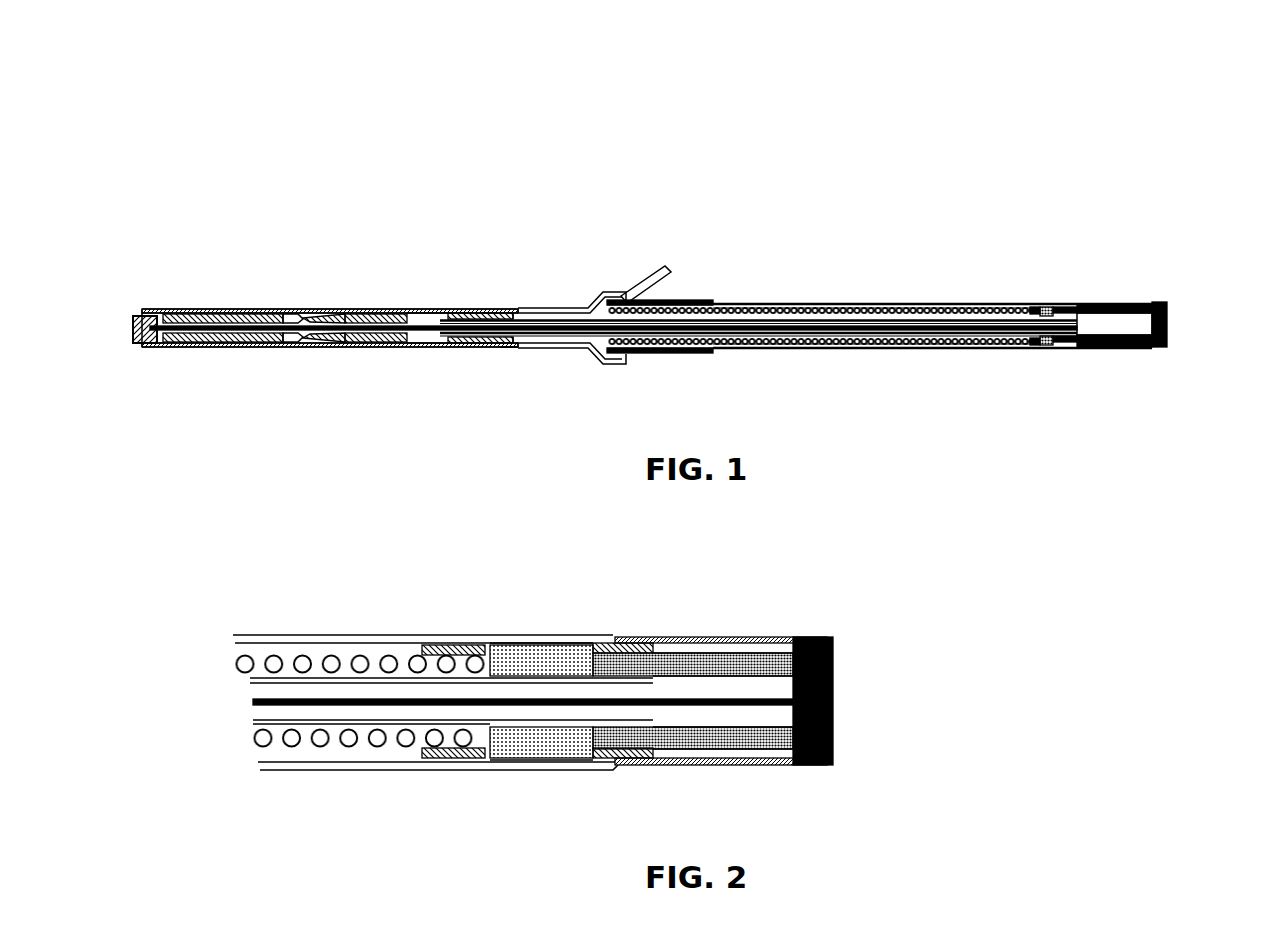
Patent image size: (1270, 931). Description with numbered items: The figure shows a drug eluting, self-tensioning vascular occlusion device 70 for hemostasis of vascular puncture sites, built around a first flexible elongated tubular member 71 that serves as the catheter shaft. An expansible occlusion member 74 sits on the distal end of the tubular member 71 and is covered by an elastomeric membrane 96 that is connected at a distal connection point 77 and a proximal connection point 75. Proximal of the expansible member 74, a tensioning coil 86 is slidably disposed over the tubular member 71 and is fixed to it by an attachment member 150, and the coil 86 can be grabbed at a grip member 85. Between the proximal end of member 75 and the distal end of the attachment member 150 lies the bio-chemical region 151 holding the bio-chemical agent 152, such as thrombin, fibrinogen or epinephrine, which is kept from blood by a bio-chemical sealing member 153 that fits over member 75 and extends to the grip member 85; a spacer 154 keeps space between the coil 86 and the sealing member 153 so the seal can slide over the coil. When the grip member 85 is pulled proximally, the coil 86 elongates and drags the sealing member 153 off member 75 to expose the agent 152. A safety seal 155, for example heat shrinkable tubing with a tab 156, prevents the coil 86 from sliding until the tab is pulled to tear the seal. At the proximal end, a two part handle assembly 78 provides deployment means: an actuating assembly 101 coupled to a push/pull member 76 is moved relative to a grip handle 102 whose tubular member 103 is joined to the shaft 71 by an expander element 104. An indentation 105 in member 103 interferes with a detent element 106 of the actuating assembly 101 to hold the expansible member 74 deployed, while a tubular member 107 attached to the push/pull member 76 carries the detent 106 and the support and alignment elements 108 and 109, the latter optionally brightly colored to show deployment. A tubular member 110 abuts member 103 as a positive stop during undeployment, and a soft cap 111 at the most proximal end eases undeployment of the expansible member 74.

In FIG. 1, the vascular occlusion device 70 is at (1030, 164).
In FIG. 1, the flexible elongated tubular member 71 is at (555, 308).
In FIG. 2, the flexible elongated tubular member 71 is at (540, 616).
In FIG. 1, the expansible occlusion member 74 is at (1110, 305).
In FIG. 2, the expansible occlusion member 74 is at (713, 641).
In FIG. 1, the proximal connection point 75 is at (1070, 305).
In FIG. 2, the proximal connection point 75 is at (608, 763).
In FIG. 1, the push/pull member 76 is at (735, 305).
In FIG. 2, the push/pull member 76 is at (360, 704).
In FIG. 1, the distal connection point 77 is at (1168, 303).
In FIG. 2, the distal connection point 77 is at (800, 765).
In FIG. 1, the handle assembly 78 is at (310, 157).
In FIG. 1, the grip member 85 is at (680, 356).
In FIG. 1, the tensioning coil 86 is at (860, 348).
In FIG. 2, the tensioning coil 86 is at (362, 657).
In FIG. 1, the elastomeric membrane 96 is at (1115, 348).
In FIG. 2, the elastomeric membrane 96 is at (770, 639).
In FIG. 1, the actuating assembly 101 is at (214, 301).
In FIG. 1, the grip handle 102 is at (535, 360).
In FIG. 1, the tubular member 103 is at (440, 308).
In FIG. 1, the expander element 104 is at (517, 308).
In FIG. 1, the indentation 105 is at (301, 311).
In FIG. 1, the detent element 106 is at (328, 348).
In FIG. 1, the tubular member 107 is at (417, 308).
In FIG. 1, the support element 108 is at (390, 348).
In FIG. 1, the indicator element 109 is at (230, 348).
In FIG. 1, the tubular member 110 is at (210, 348).
In FIG. 1, the cap 111 is at (131, 303).
In FIG. 1, the attachment member 150 is at (1022, 301).
In FIG. 2, the attachment member 150 is at (440, 755).
In FIG. 1, the bio-chemical region 151 is at (1054, 282).
In FIG. 2, the bio-chemical region 151 is at (500, 637).
In FIG. 1, the bio-chemical agent 152 is at (1052, 348).
In FIG. 2, the bio-chemical agent 152 is at (545, 758).
In FIG. 1, the bio-chemical sealing member 153 is at (975, 303).
In FIG. 2, the bio-chemical sealing member 153 is at (582, 642).
In FIG. 1, the spacer 154 is at (672, 302).
In FIG. 1, the safety seal 155 is at (578, 354).
In FIG. 1, the tab 156 is at (660, 268).